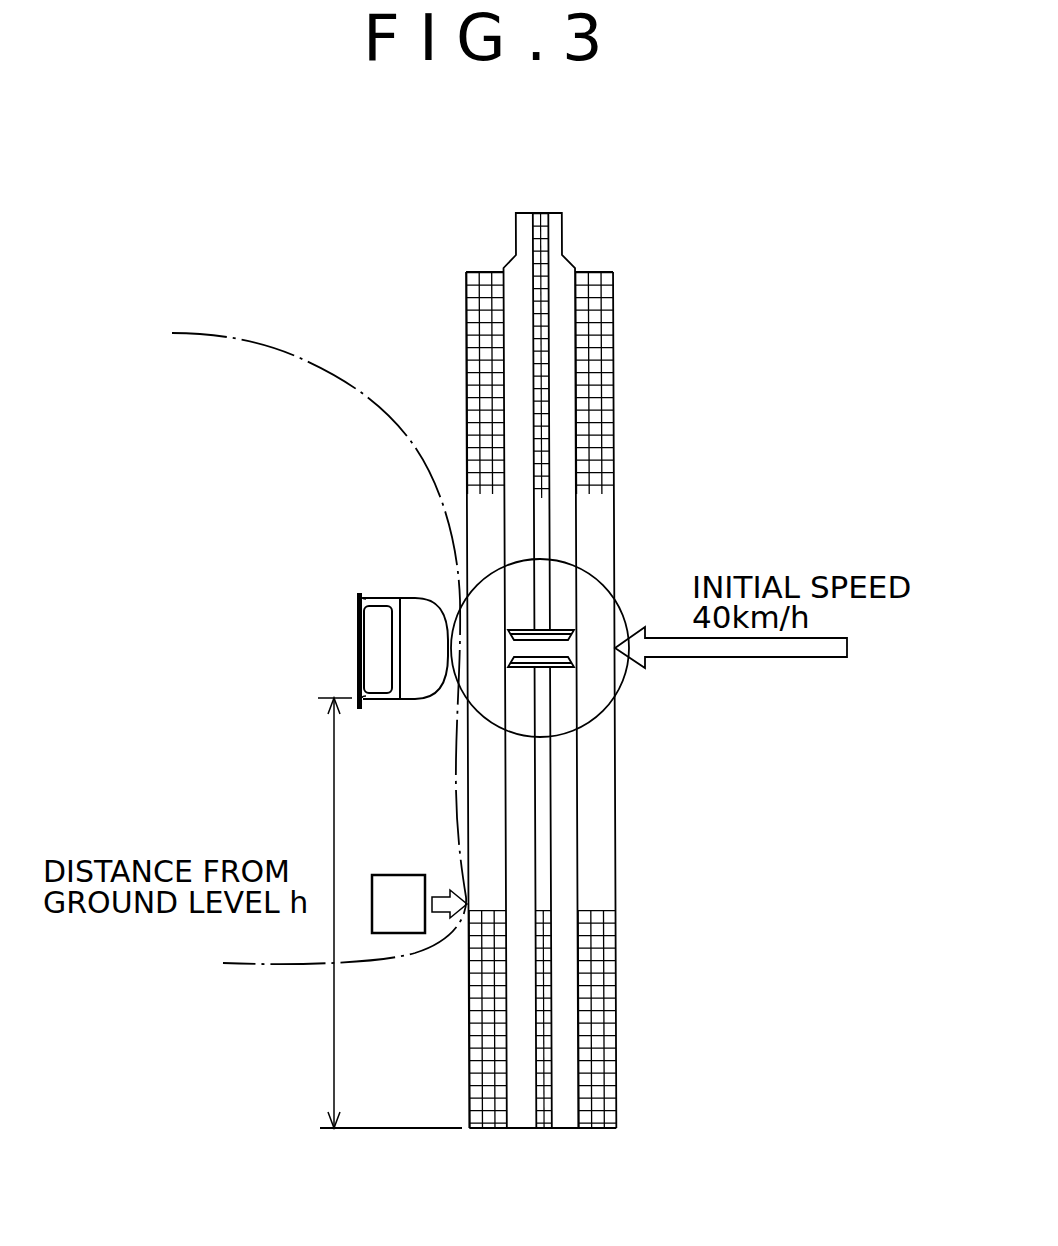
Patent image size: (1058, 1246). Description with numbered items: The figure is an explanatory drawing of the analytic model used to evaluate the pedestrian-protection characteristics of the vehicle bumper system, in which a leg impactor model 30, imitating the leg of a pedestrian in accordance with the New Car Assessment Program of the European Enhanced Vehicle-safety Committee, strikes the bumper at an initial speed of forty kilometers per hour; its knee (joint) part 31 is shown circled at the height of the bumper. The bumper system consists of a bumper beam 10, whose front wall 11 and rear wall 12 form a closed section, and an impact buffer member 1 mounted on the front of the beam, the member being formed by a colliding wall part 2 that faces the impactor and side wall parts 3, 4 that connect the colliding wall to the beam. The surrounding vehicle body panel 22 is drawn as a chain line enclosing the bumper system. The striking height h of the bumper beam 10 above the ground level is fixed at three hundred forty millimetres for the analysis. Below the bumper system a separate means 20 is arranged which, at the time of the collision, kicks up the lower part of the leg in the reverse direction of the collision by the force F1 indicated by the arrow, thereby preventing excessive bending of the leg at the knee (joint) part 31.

The impact buffer member 1 is at (405, 635).
The colliding wall part 2 is at (446, 648).
The side wall part 3 is at (407, 598).
The side wall part 4 is at (400, 700).
The bumper beam 10 is at (310, 647).
The front wall of the bumper beam 11 is at (358, 667).
The rear wall of the bumper beam 12 is at (392, 658).
The separate means 20 is at (393, 933).
The vehicle body panel 22 is at (277, 390).
The leg impactor model 30 is at (610, 309).
The knee (joint) part 31 is at (625, 608).
The force F1 is at (448, 936).